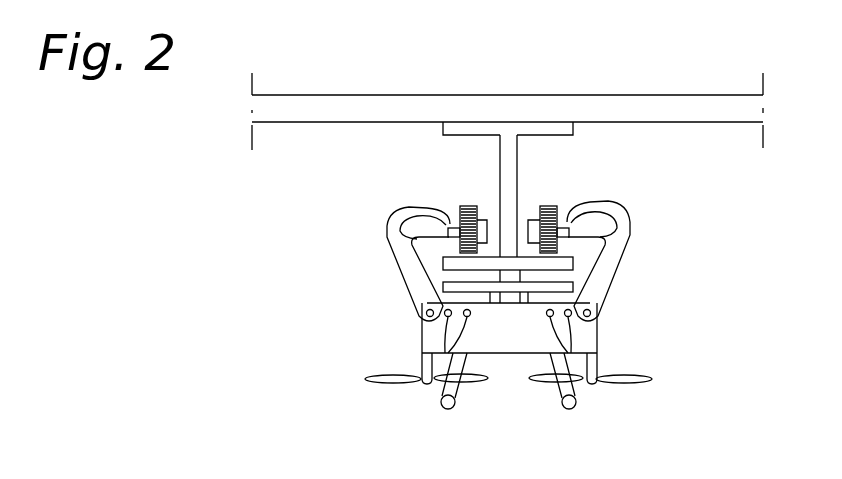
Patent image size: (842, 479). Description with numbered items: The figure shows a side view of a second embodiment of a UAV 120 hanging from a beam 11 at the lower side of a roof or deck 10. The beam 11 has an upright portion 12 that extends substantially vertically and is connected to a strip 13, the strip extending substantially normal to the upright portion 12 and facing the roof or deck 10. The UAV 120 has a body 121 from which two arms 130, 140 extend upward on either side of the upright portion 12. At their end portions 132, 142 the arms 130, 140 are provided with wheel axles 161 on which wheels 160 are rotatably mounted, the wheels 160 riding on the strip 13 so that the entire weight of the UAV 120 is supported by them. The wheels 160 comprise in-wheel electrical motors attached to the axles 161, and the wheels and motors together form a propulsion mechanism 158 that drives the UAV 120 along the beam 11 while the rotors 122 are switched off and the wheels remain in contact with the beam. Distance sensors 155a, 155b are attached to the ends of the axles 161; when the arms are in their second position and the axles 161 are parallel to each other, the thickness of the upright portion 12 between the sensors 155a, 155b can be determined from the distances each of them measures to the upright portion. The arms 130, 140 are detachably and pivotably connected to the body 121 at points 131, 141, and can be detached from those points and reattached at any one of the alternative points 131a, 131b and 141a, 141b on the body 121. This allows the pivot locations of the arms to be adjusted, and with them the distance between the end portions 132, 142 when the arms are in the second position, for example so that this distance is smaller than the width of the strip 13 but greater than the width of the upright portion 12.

The roof or deck 10 is at (647, 103).
The beam 11 is at (530, 153).
The upright portion 12 is at (510, 150).
The strip 13 is at (565, 262).
The UAV 120 is at (303, 343).
The body 121 is at (514, 340).
The propellers 122 is at (413, 385).
The arm 130 is at (410, 259).
The pivot point 131 is at (425, 313).
The alternative attachment point 131a is at (437, 332).
The alternative attachment point 131b is at (423, 357).
The end portion 132 is at (393, 243).
The arm 140 is at (614, 264).
The pivot point 141 is at (592, 309).
The alternative attachment point 141a is at (593, 333).
The alternative attachment point 141b is at (597, 355).
The end portion 142 is at (583, 227).
The distance sensor 155a is at (530, 243).
The distance sensor 155b is at (487, 243).
The propulsion mechanism 158 is at (530, 199).
The wheels 160 is at (458, 207).
The wheel axles 161 is at (450, 222).